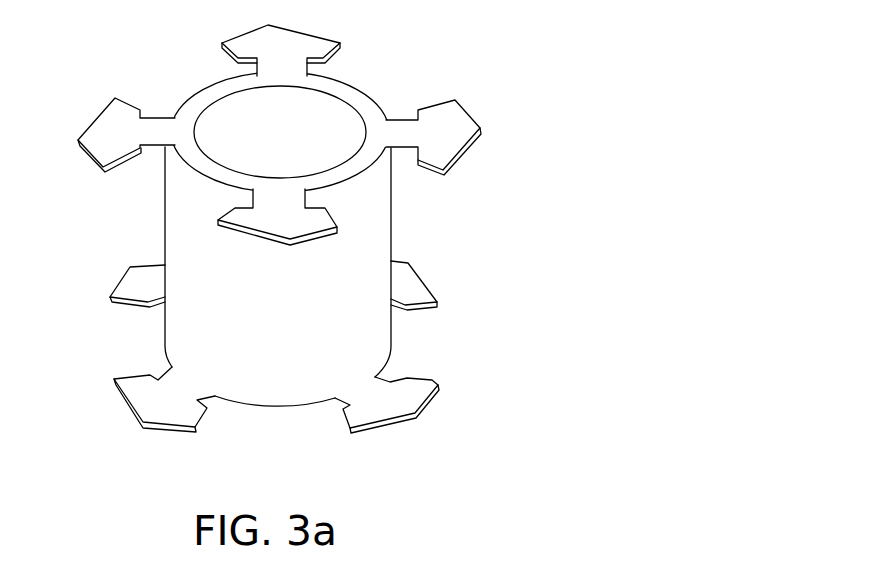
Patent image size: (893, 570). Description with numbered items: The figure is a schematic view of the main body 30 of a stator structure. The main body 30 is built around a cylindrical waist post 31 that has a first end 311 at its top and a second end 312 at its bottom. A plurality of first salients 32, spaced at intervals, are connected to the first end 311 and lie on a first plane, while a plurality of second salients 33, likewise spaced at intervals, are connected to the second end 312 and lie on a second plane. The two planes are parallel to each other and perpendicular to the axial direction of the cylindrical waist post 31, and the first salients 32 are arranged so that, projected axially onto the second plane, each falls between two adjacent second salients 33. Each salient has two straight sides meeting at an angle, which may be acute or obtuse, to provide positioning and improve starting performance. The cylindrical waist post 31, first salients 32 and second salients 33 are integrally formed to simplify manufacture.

The main body 30 is at (77, 46).
The cylindrical waist post 31 is at (383, 233).
The first end 311 is at (358, 94).
The second end 312 is at (277, 403).
The first salients 32 is at (452, 120).
The second salients 33 is at (415, 393).